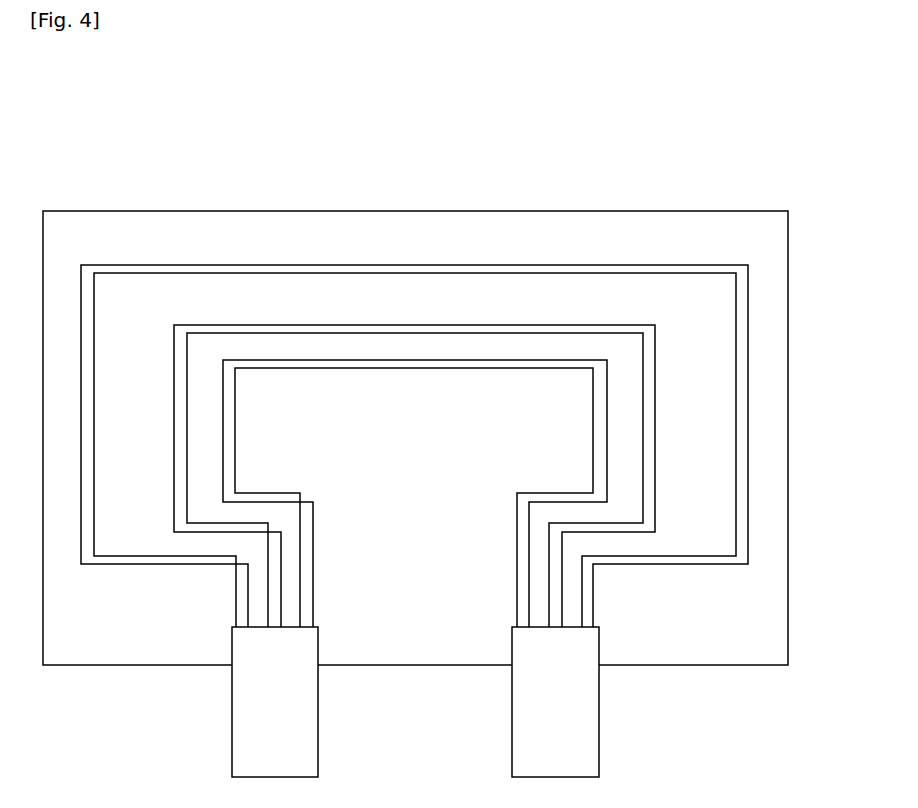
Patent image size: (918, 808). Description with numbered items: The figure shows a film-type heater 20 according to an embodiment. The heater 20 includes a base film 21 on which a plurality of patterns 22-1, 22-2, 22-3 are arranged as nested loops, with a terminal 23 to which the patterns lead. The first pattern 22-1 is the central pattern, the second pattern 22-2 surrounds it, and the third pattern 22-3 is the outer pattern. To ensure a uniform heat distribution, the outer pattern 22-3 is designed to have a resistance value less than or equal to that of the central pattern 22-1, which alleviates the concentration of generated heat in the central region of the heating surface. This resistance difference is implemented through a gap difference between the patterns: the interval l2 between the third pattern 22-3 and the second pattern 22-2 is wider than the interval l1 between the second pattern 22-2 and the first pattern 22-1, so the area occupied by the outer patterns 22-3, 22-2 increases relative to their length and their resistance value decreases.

The heater 20 is at (556, 127).
The base film 21 is at (508, 214).
The first pattern 22-1 is at (267, 363).
The second pattern 22-2 is at (360, 325).
The third pattern 22-3 is at (432, 265).
The terminal 23 is at (319, 738).
The interval between second pattern and first pattern l1 is at (223, 419).
The interval between third pattern and second pattern l2 is at (174, 397).